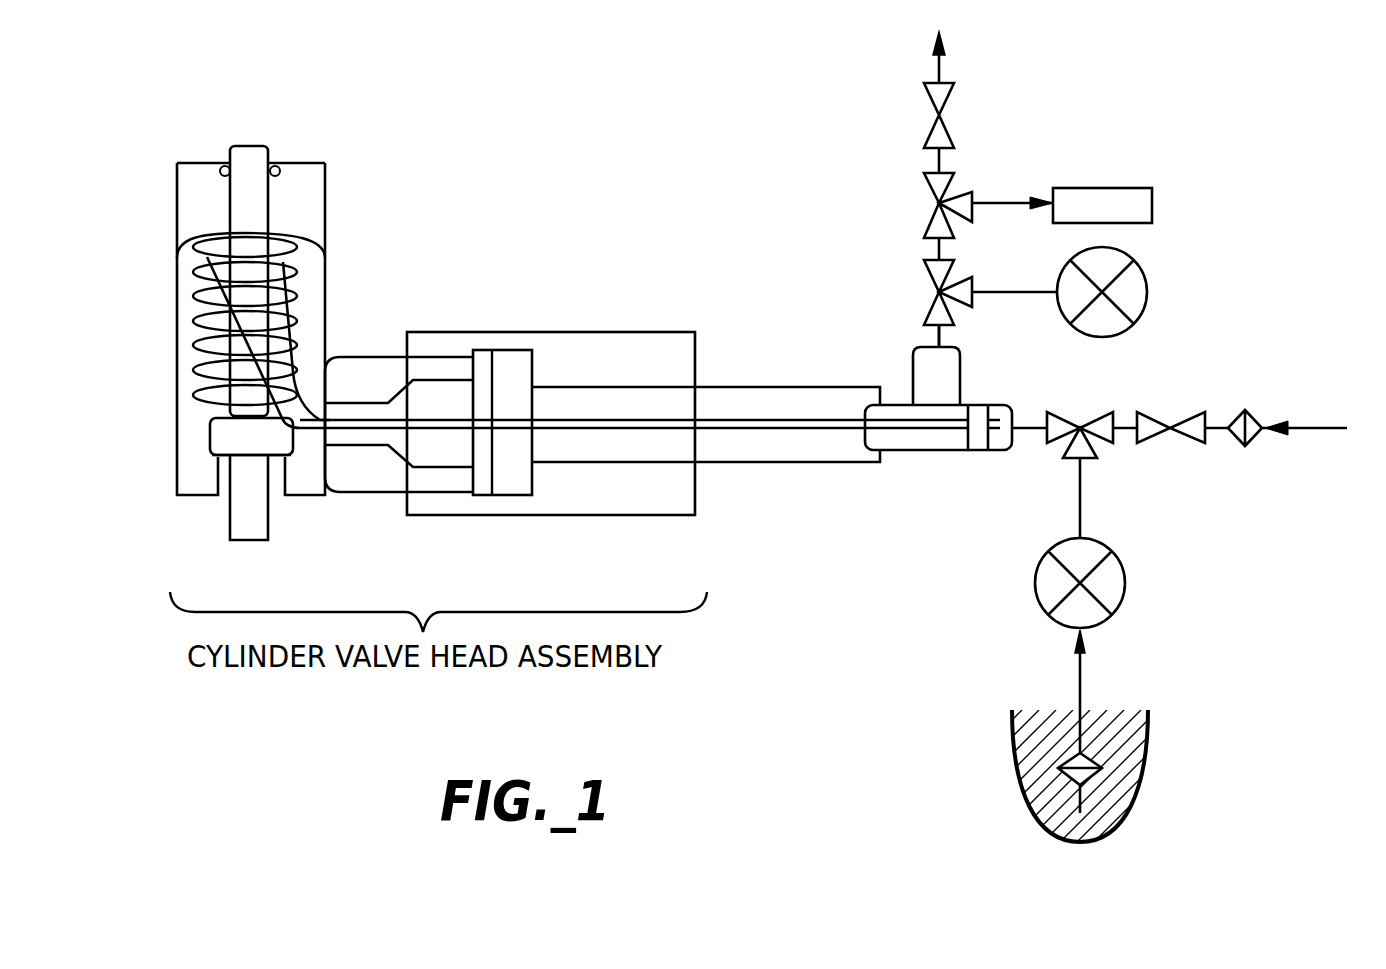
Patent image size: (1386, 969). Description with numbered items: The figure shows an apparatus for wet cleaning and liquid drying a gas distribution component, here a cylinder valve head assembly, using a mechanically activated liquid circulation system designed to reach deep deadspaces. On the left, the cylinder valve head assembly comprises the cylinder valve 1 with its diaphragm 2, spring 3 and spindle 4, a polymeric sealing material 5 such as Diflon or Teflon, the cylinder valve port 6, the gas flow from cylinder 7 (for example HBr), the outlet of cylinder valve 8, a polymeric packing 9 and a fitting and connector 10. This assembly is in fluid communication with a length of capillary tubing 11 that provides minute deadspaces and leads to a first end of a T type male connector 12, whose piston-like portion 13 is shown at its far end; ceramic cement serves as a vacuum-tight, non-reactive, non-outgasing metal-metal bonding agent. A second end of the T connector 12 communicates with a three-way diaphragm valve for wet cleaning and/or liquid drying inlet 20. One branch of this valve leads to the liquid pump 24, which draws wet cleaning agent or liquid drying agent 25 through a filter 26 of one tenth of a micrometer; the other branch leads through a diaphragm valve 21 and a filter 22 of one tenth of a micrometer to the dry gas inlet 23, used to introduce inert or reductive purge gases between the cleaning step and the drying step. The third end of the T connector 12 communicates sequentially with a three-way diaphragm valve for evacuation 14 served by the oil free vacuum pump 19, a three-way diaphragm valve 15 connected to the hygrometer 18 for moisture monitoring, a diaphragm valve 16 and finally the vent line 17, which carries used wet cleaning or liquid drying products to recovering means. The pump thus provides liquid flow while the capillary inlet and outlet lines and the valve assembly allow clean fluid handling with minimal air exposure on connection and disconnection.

The cylinder valve 1 is at (248, 146).
The diaphragm 2 is at (323, 250).
The spring 3 is at (297, 286).
The spindle 4 is at (265, 333).
The polymeric sealing material 5 is at (222, 430).
The cylinder valve port 6 is at (250, 448).
The gas flow from cylinder 7 is at (250, 530).
The outlet of cylinder valve 8 is at (410, 445).
The polymeric packing 9 is at (482, 488).
The fitting and connector 10 is at (517, 370).
The capillary tubing 11 is at (707, 418).
The T type male connector 12 is at (907, 452).
The piston 13 is at (978, 402).
The three-way diaphragm valve for evacuation 14 is at (932, 305).
The three-way diaphragm valve for moisture monitor 15 is at (932, 218).
The diaphragm valve 16 is at (932, 130).
The vent line 17 is at (938, 70).
The hygrometer 18 is at (1117, 195).
The oil free vacuum pump 19 is at (1137, 292).
The three-way diaphragm valve for wet cleaning and/or liquid drying inlet 20 is at (1072, 422).
The diaphragm valve 21 is at (1160, 422).
The 0.1 μm filter 22 is at (1248, 410).
The dry gas inlet 23 is at (1310, 423).
The liquid pump 24 is at (1118, 583).
The wet cleaning agent or liquid drying agent 25 is at (1047, 715).
The 0.1 μm filter 26 is at (1065, 760).